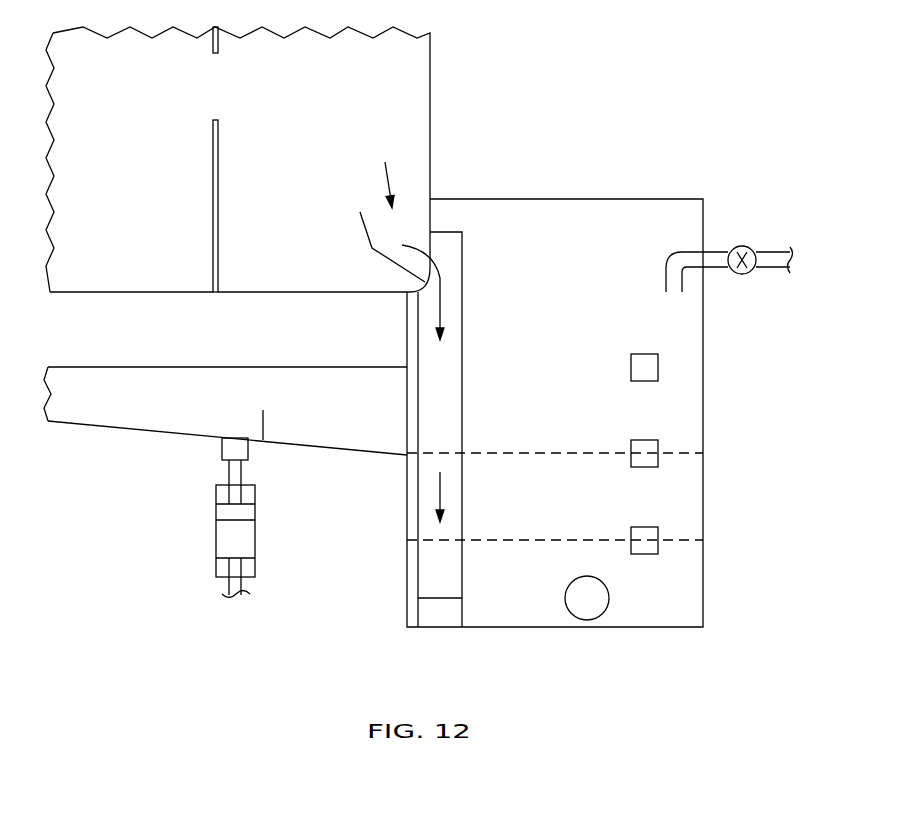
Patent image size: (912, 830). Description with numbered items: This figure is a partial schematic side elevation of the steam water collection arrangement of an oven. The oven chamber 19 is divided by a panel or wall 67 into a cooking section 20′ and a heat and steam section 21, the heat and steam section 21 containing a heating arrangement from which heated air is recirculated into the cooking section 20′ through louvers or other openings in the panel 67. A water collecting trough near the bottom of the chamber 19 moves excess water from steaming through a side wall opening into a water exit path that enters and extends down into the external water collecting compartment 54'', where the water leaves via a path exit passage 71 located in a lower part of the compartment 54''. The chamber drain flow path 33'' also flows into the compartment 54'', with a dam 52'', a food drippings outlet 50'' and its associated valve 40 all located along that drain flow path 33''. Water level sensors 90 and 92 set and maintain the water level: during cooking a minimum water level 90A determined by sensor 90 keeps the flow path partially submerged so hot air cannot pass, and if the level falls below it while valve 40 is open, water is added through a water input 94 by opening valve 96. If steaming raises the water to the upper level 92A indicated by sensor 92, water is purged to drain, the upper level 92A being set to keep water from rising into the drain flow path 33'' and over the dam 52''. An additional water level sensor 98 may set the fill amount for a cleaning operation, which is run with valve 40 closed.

The chamber 19 is at (431, 84).
The cooking section 20′ is at (152, 170).
The heat and steam section 21 is at (304, 170).
The panel or wall 67 is at (213, 248).
The path exit passage 71 is at (440, 613).
The external water collecting compartment 54'' is at (586, 413).
The water input 94 is at (678, 251).
The valve 96 is at (742, 275).
The additional water level sensor 98 is at (645, 354).
The water level sensor 92 is at (643, 440).
The upper water level 92A is at (558, 453).
The water level sensor 90 is at (643, 527).
The minimum water level 90A is at (558, 540).
The chamber drain flow path 33'' is at (225, 418).
The food drippings outlet 50'' is at (227, 438).
The dam 52'' is at (292, 420).
The valve 40 is at (256, 537).